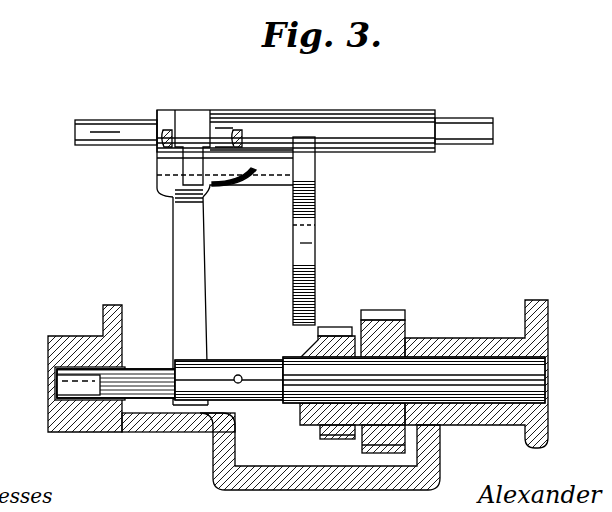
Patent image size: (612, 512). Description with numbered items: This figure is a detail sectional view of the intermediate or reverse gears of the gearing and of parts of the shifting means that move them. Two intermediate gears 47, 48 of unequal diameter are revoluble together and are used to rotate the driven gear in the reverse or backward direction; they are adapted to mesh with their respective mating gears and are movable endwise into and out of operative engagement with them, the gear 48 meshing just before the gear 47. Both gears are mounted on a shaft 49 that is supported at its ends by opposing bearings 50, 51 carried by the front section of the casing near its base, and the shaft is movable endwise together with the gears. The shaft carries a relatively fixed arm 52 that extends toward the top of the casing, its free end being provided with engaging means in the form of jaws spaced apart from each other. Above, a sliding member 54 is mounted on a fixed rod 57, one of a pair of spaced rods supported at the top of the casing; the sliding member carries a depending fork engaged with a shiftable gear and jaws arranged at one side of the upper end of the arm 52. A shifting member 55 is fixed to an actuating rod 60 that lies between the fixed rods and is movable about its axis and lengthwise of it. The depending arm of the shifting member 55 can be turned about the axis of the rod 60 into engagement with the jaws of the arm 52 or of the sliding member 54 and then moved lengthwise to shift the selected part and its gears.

The intermediate gear 47 is at (327, 340).
The intermediate gear 48 is at (372, 378).
The shaft 49 is at (403, 345).
The bearing 50 is at (78, 337).
The bearing 51 is at (462, 338).
The arm 52 is at (195, 290).
The sliding member 54 is at (256, 122).
The shifting member 55 is at (190, 130).
The fixed rod 57 is at (105, 128).
The actuating rod 60 is at (226, 130).